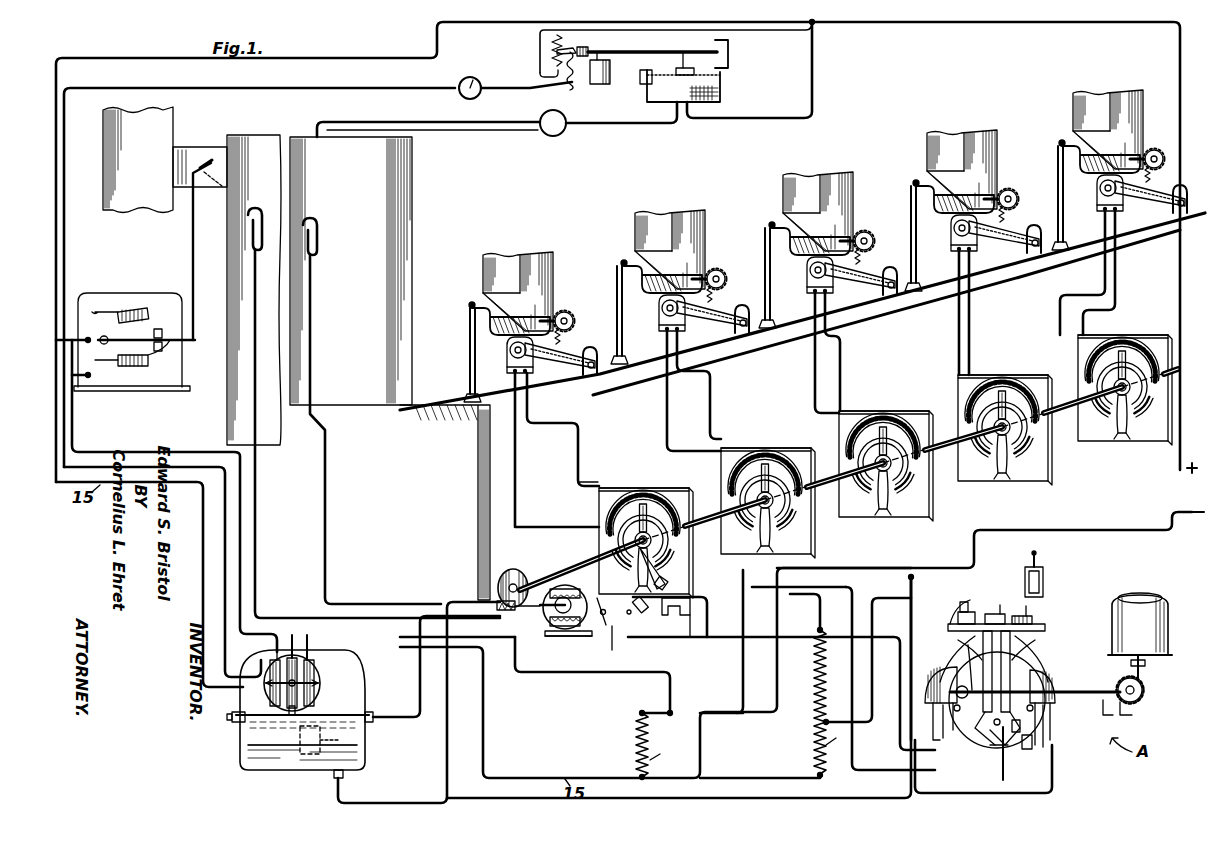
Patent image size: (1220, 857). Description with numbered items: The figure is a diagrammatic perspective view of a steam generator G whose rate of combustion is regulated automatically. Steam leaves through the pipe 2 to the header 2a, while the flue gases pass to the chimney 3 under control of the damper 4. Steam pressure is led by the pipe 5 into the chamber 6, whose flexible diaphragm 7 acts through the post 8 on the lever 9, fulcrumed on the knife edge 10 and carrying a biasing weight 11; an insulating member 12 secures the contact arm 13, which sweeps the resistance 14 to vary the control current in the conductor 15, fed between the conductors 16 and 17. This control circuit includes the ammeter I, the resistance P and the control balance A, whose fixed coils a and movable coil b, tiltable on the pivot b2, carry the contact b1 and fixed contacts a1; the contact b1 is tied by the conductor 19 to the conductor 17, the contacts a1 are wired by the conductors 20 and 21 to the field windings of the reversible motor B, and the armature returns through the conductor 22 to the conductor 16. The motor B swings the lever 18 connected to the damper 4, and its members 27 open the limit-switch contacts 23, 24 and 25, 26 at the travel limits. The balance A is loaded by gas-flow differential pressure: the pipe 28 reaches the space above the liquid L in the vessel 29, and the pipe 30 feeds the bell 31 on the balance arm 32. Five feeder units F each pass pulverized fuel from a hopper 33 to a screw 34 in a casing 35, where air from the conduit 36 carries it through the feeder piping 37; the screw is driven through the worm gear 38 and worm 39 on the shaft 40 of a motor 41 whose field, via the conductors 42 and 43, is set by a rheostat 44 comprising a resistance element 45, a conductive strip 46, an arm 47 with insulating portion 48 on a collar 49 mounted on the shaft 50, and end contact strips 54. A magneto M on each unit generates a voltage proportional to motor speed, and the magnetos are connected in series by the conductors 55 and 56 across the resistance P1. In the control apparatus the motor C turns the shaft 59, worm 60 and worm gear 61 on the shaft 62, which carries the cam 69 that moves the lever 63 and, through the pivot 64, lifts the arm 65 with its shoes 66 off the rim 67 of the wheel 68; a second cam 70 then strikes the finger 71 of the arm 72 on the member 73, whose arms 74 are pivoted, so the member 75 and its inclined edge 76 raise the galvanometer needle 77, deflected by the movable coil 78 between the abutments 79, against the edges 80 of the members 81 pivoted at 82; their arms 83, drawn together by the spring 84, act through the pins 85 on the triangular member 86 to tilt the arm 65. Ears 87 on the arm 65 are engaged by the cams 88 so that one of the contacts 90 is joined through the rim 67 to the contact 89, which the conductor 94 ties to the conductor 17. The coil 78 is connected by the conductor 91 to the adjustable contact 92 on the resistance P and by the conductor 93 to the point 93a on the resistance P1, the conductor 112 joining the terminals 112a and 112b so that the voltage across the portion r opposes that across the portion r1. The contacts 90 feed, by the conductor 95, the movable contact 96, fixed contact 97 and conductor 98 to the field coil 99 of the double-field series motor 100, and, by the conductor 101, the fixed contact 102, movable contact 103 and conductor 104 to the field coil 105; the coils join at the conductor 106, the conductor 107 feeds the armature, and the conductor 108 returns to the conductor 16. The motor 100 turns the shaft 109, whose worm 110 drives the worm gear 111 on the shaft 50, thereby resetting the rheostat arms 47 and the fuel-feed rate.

The pipe 2 is at (355, 120).
The header 2a is at (544, 137).
The stack or chimney 3 is at (173, 117).
The damper 4 is at (206, 158).
The pipe 5 is at (612, 122).
The chamber 6 is at (722, 94).
The flexible diaphragm 7 is at (656, 70).
The post 8 is at (692, 63).
The lever 9 is at (637, 50).
The knife edge 10 is at (728, 46).
The balance or biasing weight 11 is at (610, 80).
The member 12 is at (596, 41).
The contact arm 13 is at (571, 40).
The resistance 14 is at (552, 44).
The conductor 15 is at (572, 86).
The conductor 16 is at (928, 24).
The conductor 17 is at (1036, 530).
The oscillatory lever 18 is at (190, 341).
The conductor 19 is at (560, 673).
The conductor 20 is at (155, 452).
The conductor 21 is at (185, 466).
The conductor 22 is at (56, 205).
The movable contact 23 is at (132, 308).
The fixed contact 24 is at (160, 310).
The movable contact 25 is at (146, 368).
The fixed contact 26 is at (170, 370).
The oppositely extending members 27 is at (162, 330).
The pipe 28 is at (257, 507).
The vessel 29 is at (372, 766).
The second pipe 30 is at (327, 507).
The bell 31 is at (360, 746).
The pivoted balance arm 32 is at (373, 718).
The hopper 33 is at (552, 268).
The screw 34 is at (806, 249).
The casing 35 is at (509, 350).
The conduit 36 is at (471, 308).
The feeder piping 37 is at (469, 355).
The worm gear 38 is at (567, 315).
The worm 39 is at (572, 335).
The shaft 40 is at (856, 268).
The motor 41 is at (507, 370).
The conductor 42 is at (798, 369).
The conductor 43 is at (843, 348).
The field rheostat 44 is at (885, 441).
The resistance element 45 is at (668, 512).
The conductive strip 46 is at (626, 514).
The electrically conductive arm 47 is at (647, 512).
The insulating portion 48 is at (654, 535).
The collar 49 is at (881, 494).
The shaft 50 is at (931, 459).
The contact strips 54 is at (856, 403).
The conductor 55 is at (830, 377).
The conductor 56 is at (835, 393).
The shaft 59 is at (1146, 663).
The worm 60 is at (1144, 688).
The worm gear 61 is at (1134, 706).
The shaft 62 is at (1102, 714).
The lever 63 is at (968, 648).
The pivot 64 is at (970, 736).
The arm 65 is at (1033, 753).
The metal shoe 66 is at (956, 712).
The rim 67 is at (1022, 735).
The wheel 68 is at (992, 728).
The cam 69 is at (956, 688).
The second cam 70 is at (1012, 690).
The finger 71 is at (1052, 690).
The arm 72 is at (995, 665).
The member 73 is at (1012, 628).
The arms 74 is at (1082, 628).
The member 75 is at (1014, 614).
The upper edge 76 is at (997, 614).
The needle or pointer 77 is at (1021, 553).
The movable coil 78 is at (1045, 570).
The abutments 79 is at (995, 612).
The edges 80 is at (958, 614).
The members 81 is at (962, 602).
The pivot 82 is at (958, 612).
The downwardly extending arms 83 is at (958, 644).
The spring 84 is at (966, 648).
The pins 85 is at (990, 740).
The triangular member 86 is at (995, 750).
The metal ears or projections 87 is at (940, 735).
The cams 88 is at (925, 686).
The contact 89 is at (1006, 776).
The contacts 90 is at (1065, 722).
The conductor 91 is at (867, 568).
The contact 92 is at (650, 740).
The conductor 93 is at (843, 678).
The terminal 93a is at (830, 724).
The conductor 94 is at (914, 776).
The conductor 95 is at (1052, 768).
The movable contact 96 is at (643, 608).
The fixed contact 97 is at (610, 611).
The conductor 98 is at (576, 605).
The field coil 99 is at (568, 590).
The double field series motor 100 is at (558, 638).
The conductor 101 is at (768, 665).
The fixed contact 102 is at (682, 588).
The movable contact 103 is at (682, 617).
The conductor 104 is at (605, 647).
The field coil 105 is at (548, 636).
The conductor 106 is at (548, 616).
The conductor 107 is at (560, 580).
The conductor 108 is at (577, 483).
The shaft 109 is at (500, 614).
The worm 110 is at (497, 605).
The worm gear 111 is at (510, 570).
The conductor 112 is at (740, 779).
The terminal 112a is at (643, 780).
The terminal 112b is at (814, 787).
The control balance A is at (240, 752).
The reversible motor B is at (94, 294).
The electric motor C is at (1143, 615).
The fuel-feeding unit F is at (476, 263).
The furnace or steam generator G is at (400, 283).
The ammeter I is at (474, 78).
The liquid L is at (300, 752).
The commutating magneto M is at (590, 346).
The resistance P is at (630, 744).
The resistance P1 is at (810, 729).
The fixed coils a is at (268, 688).
The fixed contacts a1 is at (268, 668).
The movable coil b is at (302, 672).
The contact b1 is at (296, 685).
The knife-edge or pivot b2 is at (296, 710).
The portion of resistance R r is at (662, 759).
The portion of resistance R1 r1 is at (838, 746).